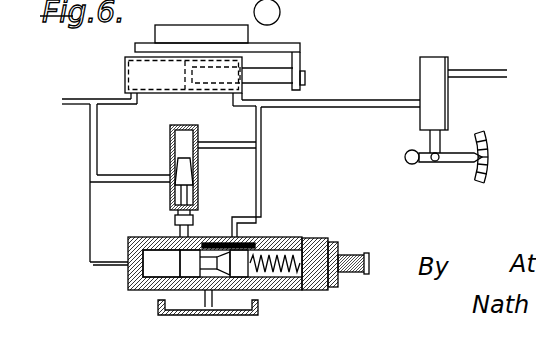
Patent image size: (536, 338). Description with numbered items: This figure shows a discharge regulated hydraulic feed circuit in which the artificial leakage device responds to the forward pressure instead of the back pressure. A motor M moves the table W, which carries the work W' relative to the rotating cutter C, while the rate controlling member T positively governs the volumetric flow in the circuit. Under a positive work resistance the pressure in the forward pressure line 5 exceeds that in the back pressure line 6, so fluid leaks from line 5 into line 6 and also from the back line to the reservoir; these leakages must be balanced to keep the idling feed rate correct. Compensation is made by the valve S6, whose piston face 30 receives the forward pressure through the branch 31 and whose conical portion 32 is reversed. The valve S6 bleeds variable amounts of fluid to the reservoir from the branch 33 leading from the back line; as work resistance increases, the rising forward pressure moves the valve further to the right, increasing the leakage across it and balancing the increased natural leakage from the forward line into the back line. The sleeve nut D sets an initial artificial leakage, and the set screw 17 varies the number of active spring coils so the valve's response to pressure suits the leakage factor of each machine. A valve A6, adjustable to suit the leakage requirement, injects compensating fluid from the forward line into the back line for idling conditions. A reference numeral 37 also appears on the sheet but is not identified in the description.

The forward pressure line 5 is at (81, 98).
The back pressure line 6 is at (343, 100).
The set screw 17 is at (366, 258).
The piston face 30 is at (172, 260).
The branch 31 is at (92, 200).
The conical portion 32 is at (218, 237).
The branch 33 is at (264, 163).
The element of adjacent figure 37 is at (512, 2).
The valve A6 is at (199, 170).
The cutter C is at (280, 12).
The sleeve nut D is at (315, 240).
The motor M is at (176, 93).
The valve S6 is at (219, 256).
The rate controlling member T is at (449, 97).
The table W is at (233, 66).
The work W' is at (201, 23).